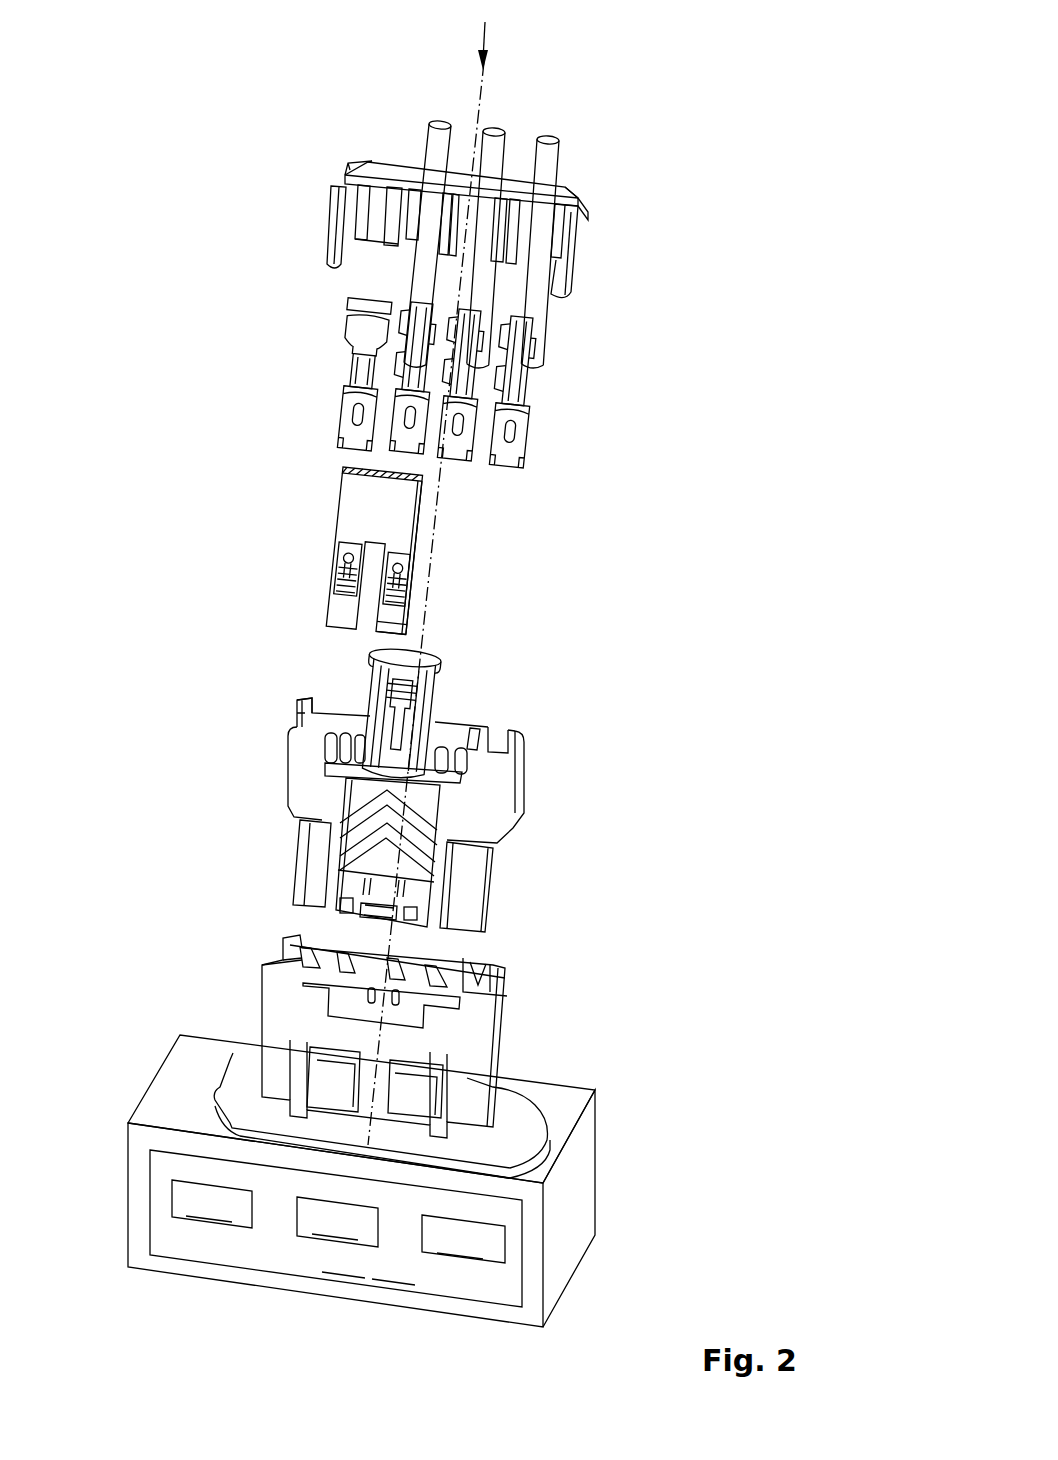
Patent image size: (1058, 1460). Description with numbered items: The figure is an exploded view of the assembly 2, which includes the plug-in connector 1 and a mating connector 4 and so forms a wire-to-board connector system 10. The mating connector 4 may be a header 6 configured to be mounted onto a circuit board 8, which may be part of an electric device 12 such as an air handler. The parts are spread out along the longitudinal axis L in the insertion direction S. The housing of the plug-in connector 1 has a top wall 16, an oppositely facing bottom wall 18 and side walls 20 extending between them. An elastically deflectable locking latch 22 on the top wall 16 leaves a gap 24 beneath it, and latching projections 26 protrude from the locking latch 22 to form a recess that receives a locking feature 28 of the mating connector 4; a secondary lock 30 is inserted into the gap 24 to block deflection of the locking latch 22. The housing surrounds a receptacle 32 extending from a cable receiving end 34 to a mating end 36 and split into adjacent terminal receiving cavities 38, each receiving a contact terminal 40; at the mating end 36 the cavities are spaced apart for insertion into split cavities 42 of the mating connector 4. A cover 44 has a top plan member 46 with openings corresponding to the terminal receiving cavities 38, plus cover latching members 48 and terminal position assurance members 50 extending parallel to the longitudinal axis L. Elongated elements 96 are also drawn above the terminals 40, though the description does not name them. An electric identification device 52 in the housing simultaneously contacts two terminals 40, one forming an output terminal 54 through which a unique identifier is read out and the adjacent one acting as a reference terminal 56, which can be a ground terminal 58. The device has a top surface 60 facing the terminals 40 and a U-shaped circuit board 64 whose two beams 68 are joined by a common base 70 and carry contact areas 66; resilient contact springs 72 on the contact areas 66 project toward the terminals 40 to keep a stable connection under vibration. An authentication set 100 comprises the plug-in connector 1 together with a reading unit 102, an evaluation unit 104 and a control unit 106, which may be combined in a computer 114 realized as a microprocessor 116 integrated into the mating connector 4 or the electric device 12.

The plug-in connector 1 is at (409, 771).
The assembly 2 is at (716, 88).
The mating connector 4 is at (404, 1022).
The header 6 is at (404, 1022).
The circuit board 8 is at (530, 1115).
The wire-to-board connector system 10 is at (702, 50).
The electric device 12 is at (407, 1181).
The top wall 16 is at (300, 778).
The bottom wall 18 is at (509, 716).
The side walls 20 is at (534, 785).
The locking latch 22 is at (345, 860).
The gap 24 is at (445, 760).
The latching projections 26 is at (340, 924).
The locking feature 28 is at (328, 1028).
The secondary lock 30 is at (445, 665).
The receptacle 32 is at (324, 684).
The cable receiving end 34 is at (268, 702).
The mating end 36 is at (505, 880).
The terminal receiving cavities 38 is at (350, 688).
The contact terminals 40 is at (525, 434).
The split cavities 42 is at (494, 956).
The cover 44 is at (444, 198).
The top plan member 46 is at (370, 178).
The cover latching members 48 is at (335, 248).
The terminal position assurance members 50 is at (567, 238).
The electric identification device 52 is at (356, 535).
The output terminal 54 is at (352, 410).
The reference terminal 56 is at (510, 402).
The ground terminal 58 is at (418, 437).
The top surface 60 is at (374, 554).
The circuit board 64 is at (412, 558).
The contact areas 66 is at (396, 579).
The beams 68 is at (391, 627).
The common base 70 is at (382, 474).
The contact springs 72 is at (348, 569).
The pins 96 is at (505, 136).
The authentication set 100 is at (735, 126).
The reading unit 102 is at (212, 1204).
The evaluation unit 104 is at (337, 1222).
The control unit 106 is at (463, 1239).
The computer 114 is at (376, 1266).
The microprocessor 116 is at (376, 1266).
The longitudinal axis L is at (480, 108).
The insertion direction S is at (486, 35).